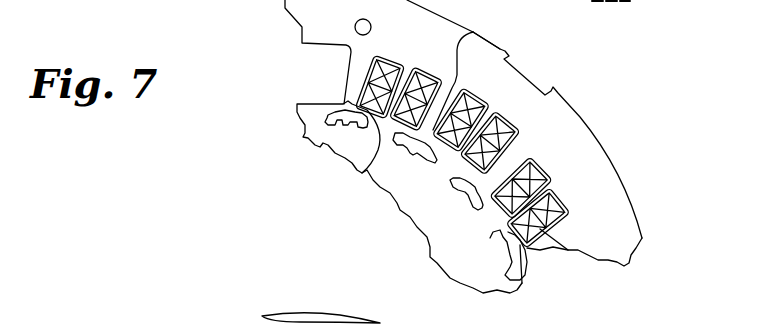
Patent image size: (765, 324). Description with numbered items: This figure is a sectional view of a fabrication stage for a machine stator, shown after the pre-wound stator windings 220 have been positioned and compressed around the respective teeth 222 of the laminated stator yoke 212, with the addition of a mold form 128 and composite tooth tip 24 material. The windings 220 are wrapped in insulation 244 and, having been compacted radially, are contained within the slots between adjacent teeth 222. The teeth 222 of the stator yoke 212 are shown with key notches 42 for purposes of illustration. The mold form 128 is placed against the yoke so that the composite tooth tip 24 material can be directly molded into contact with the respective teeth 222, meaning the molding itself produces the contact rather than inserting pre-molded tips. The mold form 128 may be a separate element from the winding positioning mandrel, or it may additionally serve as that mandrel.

The composite tooth tip 24 is at (312, 137).
The key notch 42 is at (477, 31).
The mold form 128 is at (436, 192).
The laminated stator yoke 212 is at (583, 110).
The pre-wound stator winding 220 is at (538, 253).
The tooth 222 is at (537, 257).
The insulation 244 is at (367, 170).